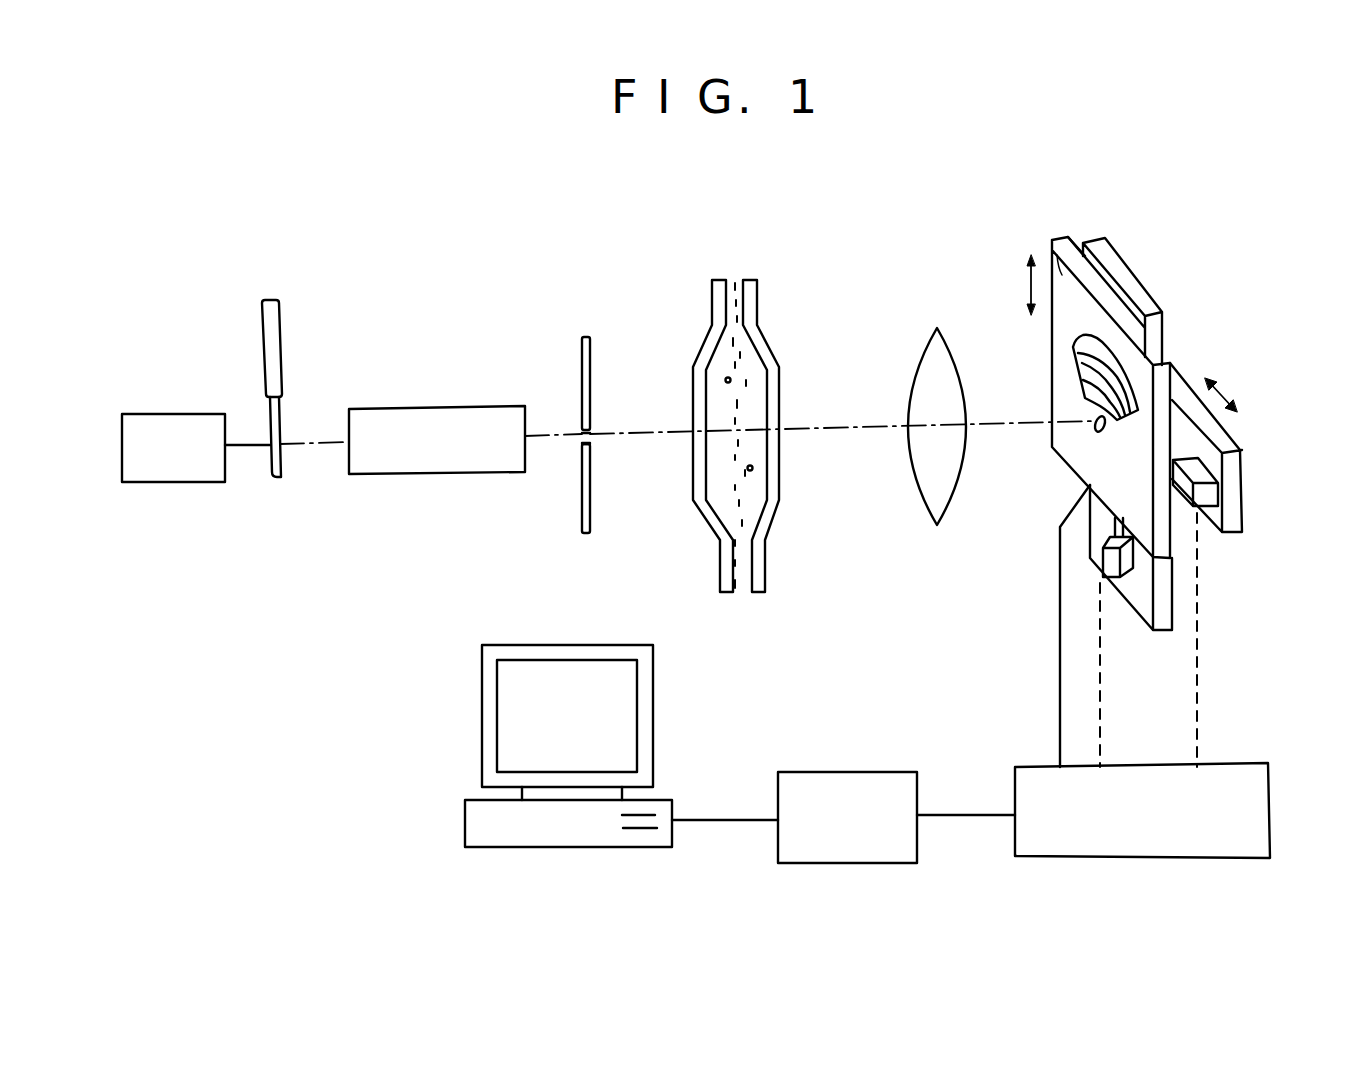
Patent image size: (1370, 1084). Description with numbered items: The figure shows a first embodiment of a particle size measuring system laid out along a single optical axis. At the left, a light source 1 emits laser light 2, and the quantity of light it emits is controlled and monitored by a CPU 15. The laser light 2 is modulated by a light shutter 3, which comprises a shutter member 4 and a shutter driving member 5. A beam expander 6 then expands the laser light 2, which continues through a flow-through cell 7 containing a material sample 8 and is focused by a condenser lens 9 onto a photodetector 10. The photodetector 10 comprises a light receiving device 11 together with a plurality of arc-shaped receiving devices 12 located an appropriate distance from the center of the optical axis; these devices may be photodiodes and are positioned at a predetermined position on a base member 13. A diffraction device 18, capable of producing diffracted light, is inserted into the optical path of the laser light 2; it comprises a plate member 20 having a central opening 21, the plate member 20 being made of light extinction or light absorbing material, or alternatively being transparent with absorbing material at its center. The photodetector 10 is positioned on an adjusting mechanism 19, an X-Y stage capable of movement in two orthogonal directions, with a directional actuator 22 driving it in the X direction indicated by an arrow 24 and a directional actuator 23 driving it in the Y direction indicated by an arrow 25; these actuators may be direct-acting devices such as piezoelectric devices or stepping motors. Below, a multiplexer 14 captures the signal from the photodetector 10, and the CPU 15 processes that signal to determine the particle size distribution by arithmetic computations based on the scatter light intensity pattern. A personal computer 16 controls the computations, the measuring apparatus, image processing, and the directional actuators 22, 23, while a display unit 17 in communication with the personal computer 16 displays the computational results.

The light source 1 is at (180, 483).
The laser light 2 is at (245, 446).
The light shutter 3 is at (162, 291).
The shutter member 4 is at (268, 427).
The shutter driving member 5 is at (262, 328).
The beam expander 6 is at (427, 475).
The flow-through cell 7 is at (727, 431).
The material sample 8 is at (747, 362).
The condenser lens 9 is at (921, 488).
The photodetector 10 is at (897, 150).
The light receiving device 11 is at (1094, 423).
The arc-shaped receiving devices 12 is at (1073, 365).
The base member 13 is at (1068, 237).
The multiplexer 14 is at (1103, 857).
The CPU 15 is at (867, 863).
The personal computer 16 is at (465, 828).
The display unit 17 is at (482, 707).
The diffraction device 18 is at (580, 367).
The adjusting mechanism 19 is at (1173, 323).
The plate member 20 is at (585, 487).
The central opening 21 is at (580, 433).
The directional actuator 22 is at (1205, 466).
The directional actuator 23 is at (1107, 563).
The arrow 24 is at (1225, 393).
The arrow 25 is at (1030, 283).